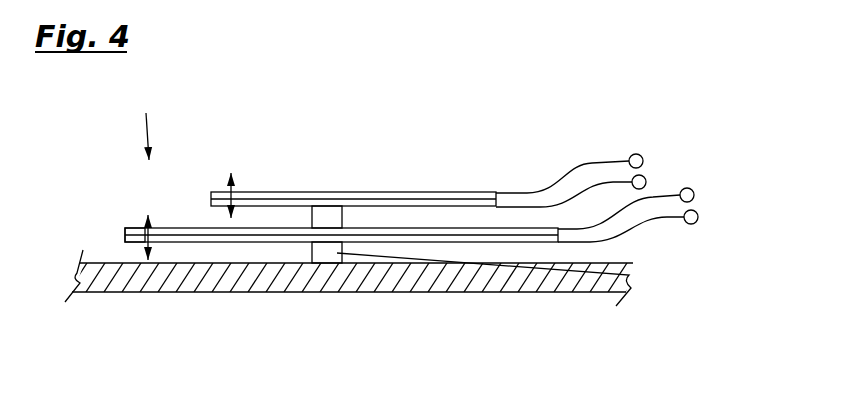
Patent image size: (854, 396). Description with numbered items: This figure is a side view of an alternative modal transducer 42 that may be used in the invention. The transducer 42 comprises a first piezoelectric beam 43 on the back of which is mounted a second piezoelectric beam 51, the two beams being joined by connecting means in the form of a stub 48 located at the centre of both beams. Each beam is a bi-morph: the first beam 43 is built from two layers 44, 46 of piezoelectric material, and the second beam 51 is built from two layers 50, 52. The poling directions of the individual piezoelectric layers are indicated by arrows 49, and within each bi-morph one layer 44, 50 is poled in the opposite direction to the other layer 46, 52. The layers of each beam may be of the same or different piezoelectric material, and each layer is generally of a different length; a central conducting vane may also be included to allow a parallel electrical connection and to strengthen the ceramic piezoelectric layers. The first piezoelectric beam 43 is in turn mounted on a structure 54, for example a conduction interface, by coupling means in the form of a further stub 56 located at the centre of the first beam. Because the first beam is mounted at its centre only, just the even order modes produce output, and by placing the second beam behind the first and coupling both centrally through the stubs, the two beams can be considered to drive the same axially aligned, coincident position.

The transducer 42 is at (369, 197).
The first piezoelectric beam 43 is at (147, 122).
The layer of piezoelectric material 44 is at (128, 228).
The layer of piezoelectric material 46 is at (125, 237).
The stub 48 is at (325, 218).
The arrows 49 is at (148, 212).
The layer of piezoelectric material 50 is at (450, 193).
The second piezoelectric beam 51 is at (283, 177).
The layer of piezoelectric material 52 is at (473, 193).
The structure 54 is at (185, 292).
The stub 56 is at (325, 255).